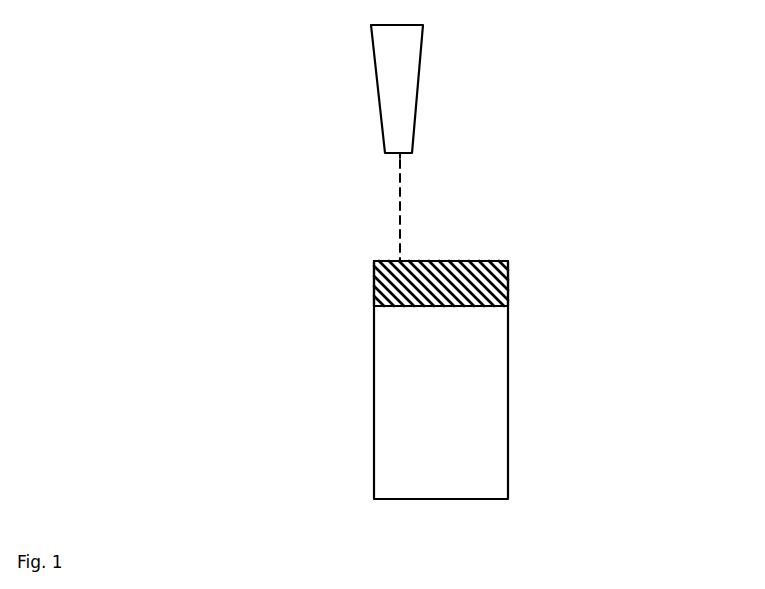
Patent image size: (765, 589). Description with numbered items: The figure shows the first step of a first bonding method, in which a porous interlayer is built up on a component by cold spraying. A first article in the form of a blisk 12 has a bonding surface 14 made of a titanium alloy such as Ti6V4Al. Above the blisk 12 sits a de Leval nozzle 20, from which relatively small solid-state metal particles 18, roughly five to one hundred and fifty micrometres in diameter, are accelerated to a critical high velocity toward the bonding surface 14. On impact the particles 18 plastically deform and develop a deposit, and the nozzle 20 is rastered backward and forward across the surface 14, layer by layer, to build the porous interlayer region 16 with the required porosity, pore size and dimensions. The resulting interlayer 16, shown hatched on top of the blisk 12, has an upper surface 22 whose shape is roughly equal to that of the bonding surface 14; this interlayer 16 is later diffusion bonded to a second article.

The blisk 12 is at (373, 322).
The bonding surface 14 is at (457, 306).
The porous interlayer region 16 is at (508, 285).
The metal particles 18 is at (398, 205).
The de Leval nozzle 20 is at (416, 112).
The upper surface 22 is at (457, 260).